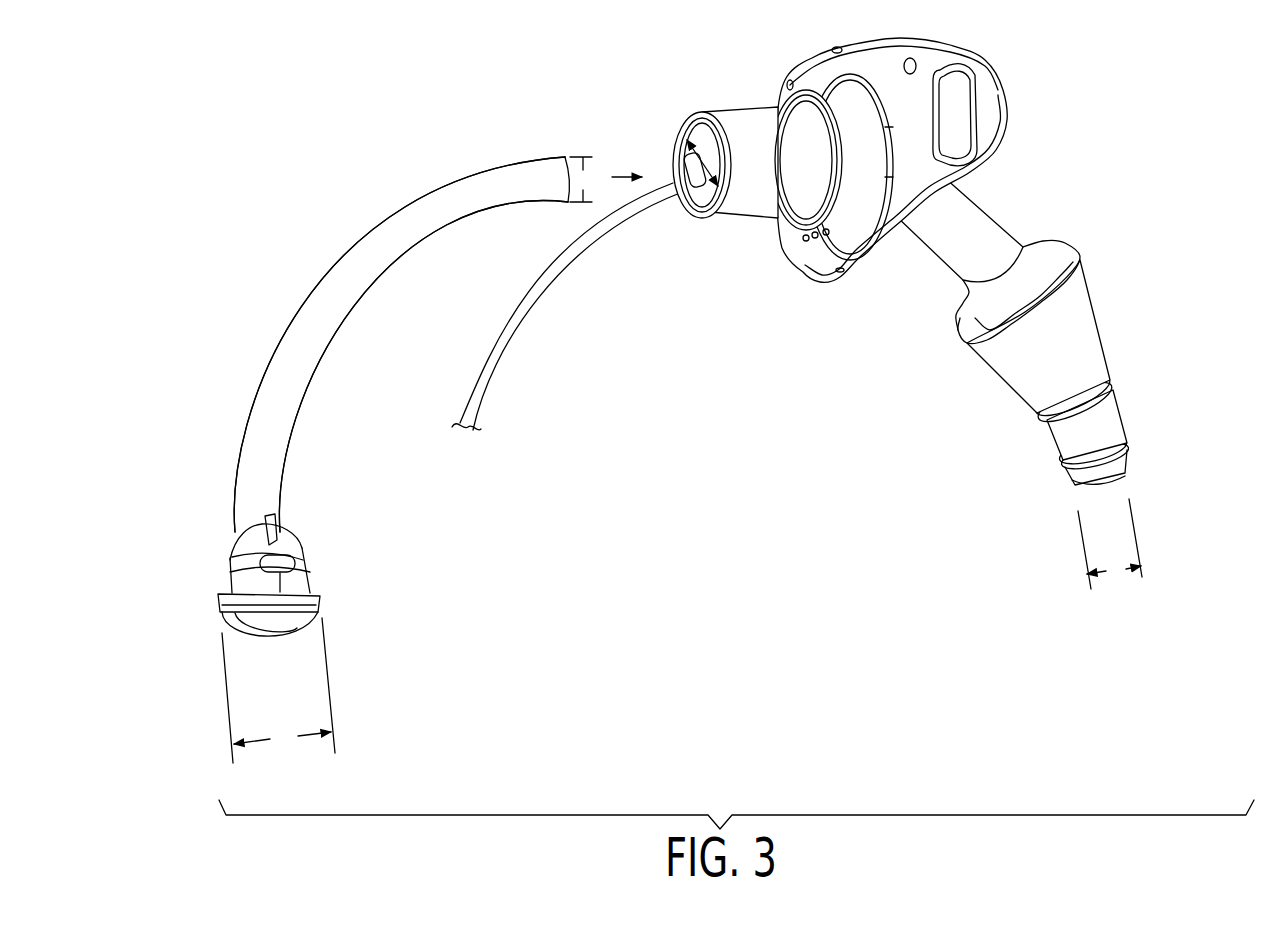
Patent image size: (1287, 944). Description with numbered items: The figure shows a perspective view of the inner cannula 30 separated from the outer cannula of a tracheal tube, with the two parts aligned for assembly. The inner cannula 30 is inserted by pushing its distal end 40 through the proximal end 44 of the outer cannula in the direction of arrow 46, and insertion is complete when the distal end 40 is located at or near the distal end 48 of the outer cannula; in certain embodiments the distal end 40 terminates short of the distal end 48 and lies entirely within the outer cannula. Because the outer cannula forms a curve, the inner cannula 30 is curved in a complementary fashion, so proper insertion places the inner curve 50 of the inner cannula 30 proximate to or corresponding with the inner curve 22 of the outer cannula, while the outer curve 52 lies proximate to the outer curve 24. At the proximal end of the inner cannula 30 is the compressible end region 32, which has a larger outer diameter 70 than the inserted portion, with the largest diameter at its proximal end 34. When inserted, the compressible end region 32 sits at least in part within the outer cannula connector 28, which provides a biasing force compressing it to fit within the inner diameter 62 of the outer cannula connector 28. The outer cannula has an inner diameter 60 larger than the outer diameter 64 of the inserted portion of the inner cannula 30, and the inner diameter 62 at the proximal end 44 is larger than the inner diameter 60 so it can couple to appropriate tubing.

The inner curve 22 is at (933, 237).
The outer curve 24 is at (967, 188).
The outer cannula connector 28 is at (745, 112).
The inner cannula 30 is at (183, 412).
The compressible end region 32 is at (222, 560).
The proximal end 34 is at (247, 642).
The distal end 40 is at (567, 149).
The proximal end 44 is at (690, 207).
The arrow 46 is at (622, 176).
The distal end 48 is at (1103, 485).
The inner curve 50 is at (333, 348).
The outer curve 52 is at (288, 325).
The inner diameter 60 is at (1119, 585).
The inner diameter 62 is at (333, 257).
The outer diameter 64 is at (592, 185).
The outer diameter 70 is at (291, 750).